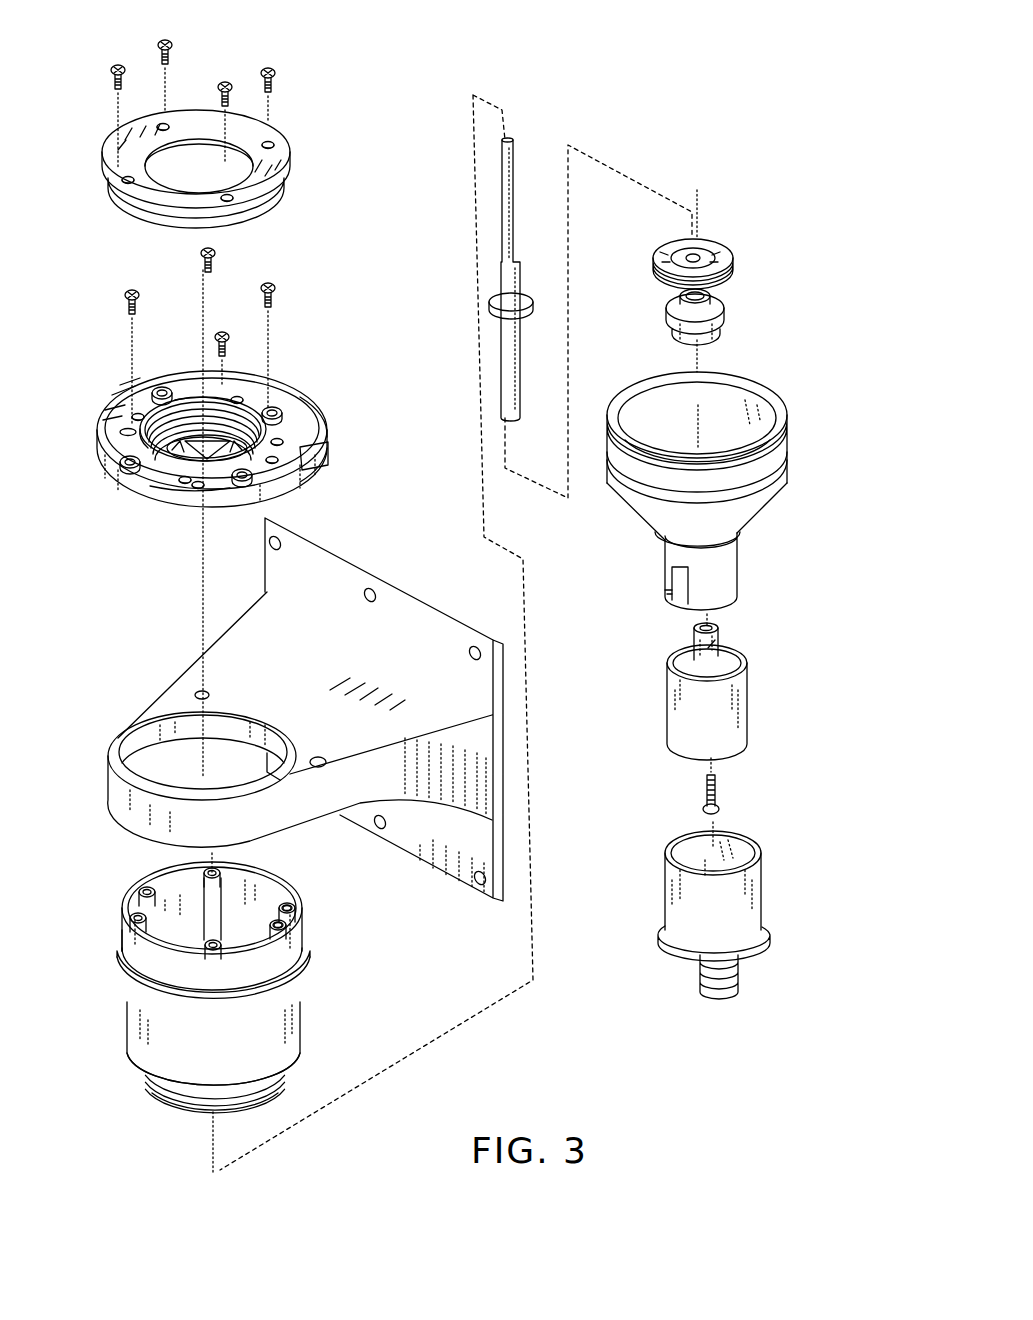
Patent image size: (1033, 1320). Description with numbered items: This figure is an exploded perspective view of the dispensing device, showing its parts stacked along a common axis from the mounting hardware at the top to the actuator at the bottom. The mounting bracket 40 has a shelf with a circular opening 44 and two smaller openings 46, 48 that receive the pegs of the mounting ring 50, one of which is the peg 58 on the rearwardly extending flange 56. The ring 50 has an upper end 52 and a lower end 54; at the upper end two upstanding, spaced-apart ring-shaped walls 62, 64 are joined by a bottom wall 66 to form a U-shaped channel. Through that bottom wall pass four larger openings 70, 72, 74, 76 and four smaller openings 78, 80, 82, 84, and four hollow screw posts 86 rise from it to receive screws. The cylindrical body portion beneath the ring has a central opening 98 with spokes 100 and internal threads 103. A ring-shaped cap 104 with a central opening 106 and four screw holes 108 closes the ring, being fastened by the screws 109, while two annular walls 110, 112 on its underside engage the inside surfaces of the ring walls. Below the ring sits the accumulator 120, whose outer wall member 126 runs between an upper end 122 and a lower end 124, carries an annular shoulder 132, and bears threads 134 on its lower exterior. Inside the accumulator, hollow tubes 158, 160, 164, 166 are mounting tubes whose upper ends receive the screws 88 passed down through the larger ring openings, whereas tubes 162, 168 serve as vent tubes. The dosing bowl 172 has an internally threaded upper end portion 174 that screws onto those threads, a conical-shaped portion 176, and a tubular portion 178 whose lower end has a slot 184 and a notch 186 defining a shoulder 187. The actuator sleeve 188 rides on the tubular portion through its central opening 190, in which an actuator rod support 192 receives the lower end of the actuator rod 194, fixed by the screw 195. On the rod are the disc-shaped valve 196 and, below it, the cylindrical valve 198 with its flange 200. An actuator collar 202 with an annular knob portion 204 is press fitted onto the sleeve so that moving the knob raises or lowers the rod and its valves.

The mounting bracket 40 is at (300, 640).
The circular opening 44 is at (185, 730).
The smaller opening 46 is at (327, 766).
The smaller opening 48 is at (197, 692).
The mounting ring 50 is at (85, 440).
The upper end 52 is at (118, 417).
The lower end 54 is at (180, 510).
The flange 56 is at (310, 403).
The peg 58 is at (137, 410).
The ring-shaped wall 62 is at (290, 463).
The ring-shaped wall 64 is at (313, 420).
The bottom wall 66 is at (132, 427).
The larger opening 70 is at (320, 437).
The larger opening 72 is at (197, 493).
The larger opening 74 is at (117, 437).
The larger opening 76 is at (220, 387).
The smaller opening 78 is at (317, 460).
The smaller opening 80 is at (163, 483).
The smaller opening 82 is at (127, 393).
The smaller opening 84 is at (240, 397).
The hollow screw posts 86 is at (176, 388).
The screws 88 is at (275, 293).
The central opening 98 is at (273, 417).
The spokes 100 is at (277, 450).
The internal threads 103 is at (205, 385).
The ring-shaped cap 104 is at (303, 153).
The central opening 106 is at (233, 157).
The screw holes 108 is at (232, 201).
The screws 109 is at (262, 67).
The annular wall 110 is at (150, 217).
The annular wall 112 is at (150, 157).
The accumulator 120 is at (122, 1016).
The upper end 122 is at (285, 877).
The lower end 124 is at (287, 1080).
The outer wall member 126 is at (200, 1051).
The annular shoulder 132 is at (307, 955).
The threads 134 is at (182, 1113).
The hollow tube 158 is at (202, 885).
The hollow tube 160 is at (297, 905).
The hollow tube 162 is at (290, 928).
The hollow tube 164 is at (300, 977).
The hollow tube 166 is at (122, 938).
The hollow tube 168 is at (138, 897).
The dosing bowl 172 is at (637, 515).
The upper end portion 174 is at (745, 373).
The conical-shaped portion 176 is at (727, 505).
The tubular portion 178 is at (723, 573).
The slot 184 is at (740, 542).
The notch 186 is at (678, 597).
The shoulder 187 is at (667, 575).
The actuator sleeve 188 is at (767, 718).
The central opening 190 is at (737, 650).
The actuator rod support 192 is at (677, 642).
The actuator rod 194 is at (521, 387).
The screw 195 is at (720, 793).
The disc-shaped valve 196 is at (733, 262).
The cylindrical valve 198 is at (720, 330).
The flange 200 is at (723, 300).
The actuator collar 202 is at (772, 883).
The annular knob portion 204 is at (768, 940).